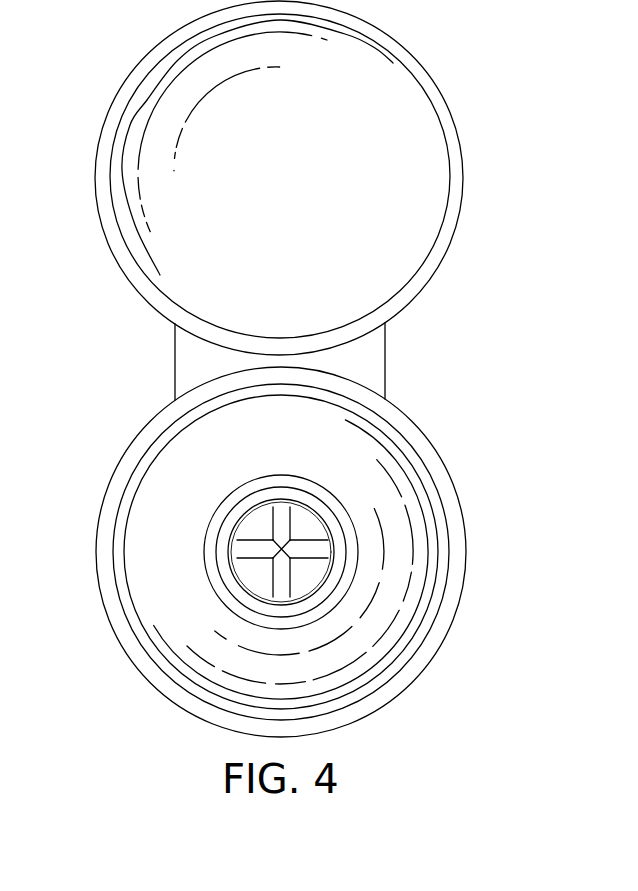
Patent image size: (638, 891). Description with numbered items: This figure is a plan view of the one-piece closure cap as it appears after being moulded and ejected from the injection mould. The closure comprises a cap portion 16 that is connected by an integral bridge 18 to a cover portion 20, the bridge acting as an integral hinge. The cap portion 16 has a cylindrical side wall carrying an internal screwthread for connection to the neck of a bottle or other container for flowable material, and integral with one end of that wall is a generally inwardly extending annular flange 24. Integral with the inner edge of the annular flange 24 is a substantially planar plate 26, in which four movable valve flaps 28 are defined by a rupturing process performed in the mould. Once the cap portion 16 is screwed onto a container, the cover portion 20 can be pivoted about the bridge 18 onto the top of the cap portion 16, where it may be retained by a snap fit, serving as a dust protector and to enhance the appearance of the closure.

The cap portion 16 is at (98, 557).
The integral bridge 18 is at (175, 356).
The cover portion 20 is at (95, 170).
The annular flange 24 is at (147, 590).
The plate 26 is at (255, 572).
The movable valve flaps 28 is at (320, 550).